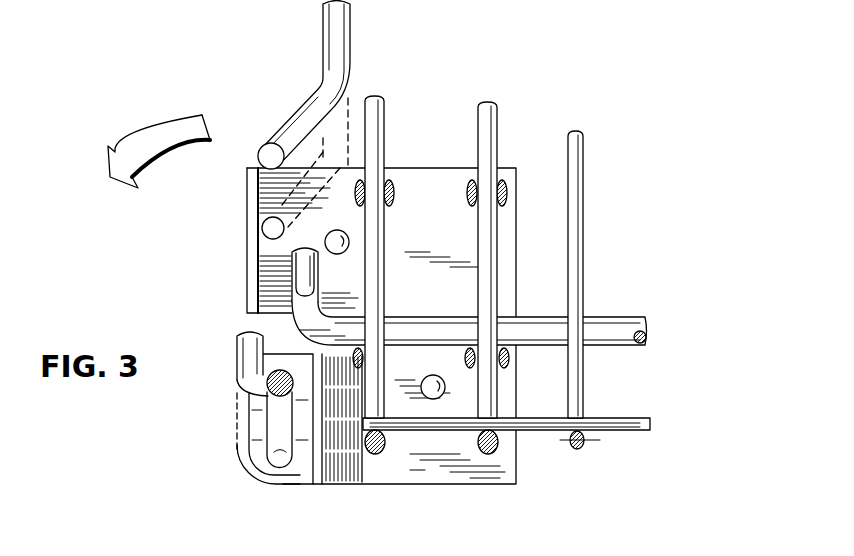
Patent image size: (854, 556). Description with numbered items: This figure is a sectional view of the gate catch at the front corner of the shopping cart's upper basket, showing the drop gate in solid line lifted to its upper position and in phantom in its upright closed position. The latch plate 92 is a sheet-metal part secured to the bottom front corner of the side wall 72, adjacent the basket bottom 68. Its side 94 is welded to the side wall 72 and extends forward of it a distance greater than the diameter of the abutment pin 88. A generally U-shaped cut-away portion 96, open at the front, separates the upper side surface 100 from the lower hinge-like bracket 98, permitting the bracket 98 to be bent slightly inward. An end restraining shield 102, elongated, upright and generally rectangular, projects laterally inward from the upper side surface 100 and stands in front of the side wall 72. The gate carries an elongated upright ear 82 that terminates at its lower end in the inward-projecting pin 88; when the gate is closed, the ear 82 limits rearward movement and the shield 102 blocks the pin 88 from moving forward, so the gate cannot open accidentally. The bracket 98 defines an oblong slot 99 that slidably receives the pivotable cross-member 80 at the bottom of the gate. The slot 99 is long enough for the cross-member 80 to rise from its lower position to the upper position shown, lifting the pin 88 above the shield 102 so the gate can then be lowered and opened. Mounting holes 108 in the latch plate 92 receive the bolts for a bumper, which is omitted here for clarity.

The bottom 68 is at (605, 432).
The side wall 72 is at (497, 130).
The pivotable cross-member 80 is at (293, 392).
The ear 82 is at (349, 30).
The abutment pin 88 is at (258, 152).
The second latch plate 92 is at (450, 166).
The side 94 is at (505, 266).
The cut-away portion 96 is at (333, 355).
The lower hinge-like bracket 98 is at (292, 486).
The oblong slot 99 is at (288, 425).
The upper side surface 100 is at (270, 307).
The end restraining shield 102 is at (246, 288).
The mounting holes 108 is at (349, 239).